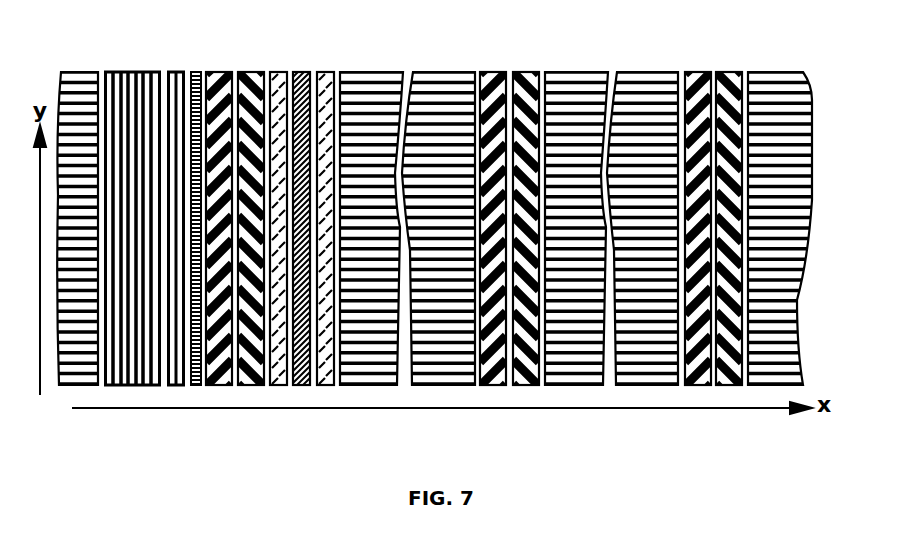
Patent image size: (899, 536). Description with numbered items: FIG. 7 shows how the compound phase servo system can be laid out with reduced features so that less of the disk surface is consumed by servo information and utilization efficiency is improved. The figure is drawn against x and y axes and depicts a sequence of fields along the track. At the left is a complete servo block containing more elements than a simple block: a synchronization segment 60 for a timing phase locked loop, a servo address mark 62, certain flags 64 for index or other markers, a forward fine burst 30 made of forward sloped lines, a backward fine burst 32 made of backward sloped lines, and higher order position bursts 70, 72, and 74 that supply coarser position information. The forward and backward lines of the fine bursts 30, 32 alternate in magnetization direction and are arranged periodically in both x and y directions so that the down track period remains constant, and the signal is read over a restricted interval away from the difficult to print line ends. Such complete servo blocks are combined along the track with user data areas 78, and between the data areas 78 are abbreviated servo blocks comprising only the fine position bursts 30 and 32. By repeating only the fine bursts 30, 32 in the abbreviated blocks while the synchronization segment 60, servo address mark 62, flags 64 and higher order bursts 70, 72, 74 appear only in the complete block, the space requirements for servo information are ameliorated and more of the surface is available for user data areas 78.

The forward fine burst 30 is at (457, 223).
The backward fine burst 32 is at (489, 223).
The synchronization segment 60 is at (133, 211).
The servo address mark 62 is at (175, 211).
The flags 64 is at (197, 389).
The higher order position burst 70 is at (280, 389).
The higher order position burst 72 is at (304, 227).
The higher order position burst 74 is at (325, 389).
The user data areas 78 is at (435, 211).